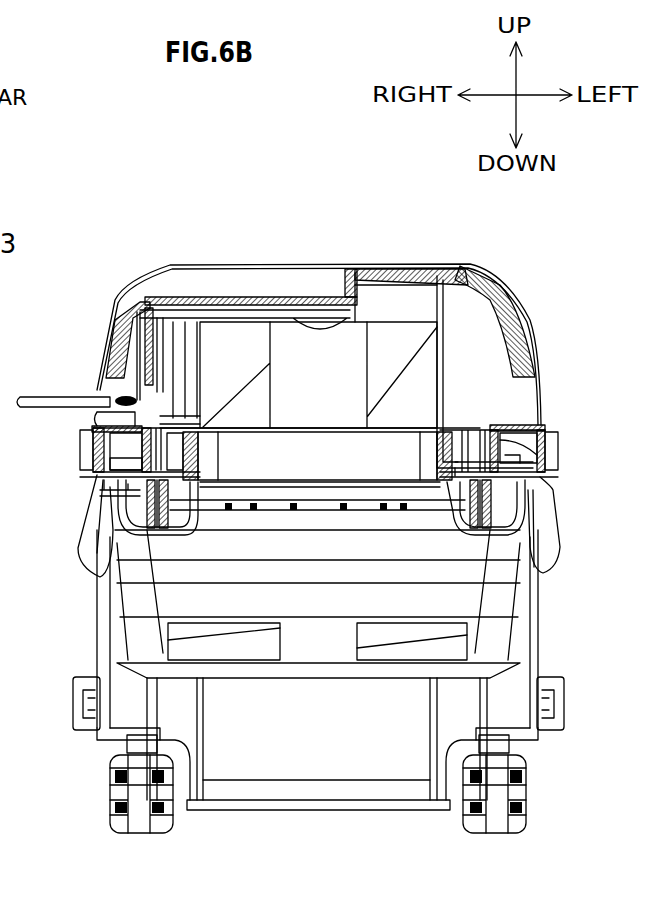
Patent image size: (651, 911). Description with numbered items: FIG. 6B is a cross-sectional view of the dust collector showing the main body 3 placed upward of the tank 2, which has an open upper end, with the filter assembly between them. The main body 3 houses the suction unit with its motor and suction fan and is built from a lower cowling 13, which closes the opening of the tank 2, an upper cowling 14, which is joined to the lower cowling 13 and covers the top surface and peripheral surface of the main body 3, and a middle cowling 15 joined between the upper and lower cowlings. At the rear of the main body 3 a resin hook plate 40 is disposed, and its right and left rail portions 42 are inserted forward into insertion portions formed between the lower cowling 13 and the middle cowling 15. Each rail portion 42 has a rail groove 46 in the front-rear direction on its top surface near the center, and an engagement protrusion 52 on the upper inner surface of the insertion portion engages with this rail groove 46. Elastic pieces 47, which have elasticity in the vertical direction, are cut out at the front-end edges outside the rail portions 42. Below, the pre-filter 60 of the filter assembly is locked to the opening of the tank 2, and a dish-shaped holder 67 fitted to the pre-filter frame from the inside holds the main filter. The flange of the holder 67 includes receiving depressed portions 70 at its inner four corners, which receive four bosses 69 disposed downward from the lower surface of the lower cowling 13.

The tank 2 is at (568, 655).
The main body 3 is at (297, 264).
The lower cowling 13 is at (550, 500).
The upper cowling 14 is at (417, 263).
The middle cowling 15 is at (440, 338).
The hook plate 40 is at (562, 446).
The rail portions 42 is at (100, 430).
The rail groove 46 is at (503, 457).
The elastic pieces 47 is at (112, 413).
The engagement protrusion 52 is at (110, 330).
The pre-filter 60 is at (402, 672).
The holder 67 is at (145, 515).
The bosses 69 is at (152, 522).
The receiving depressed portions 70 is at (150, 535).